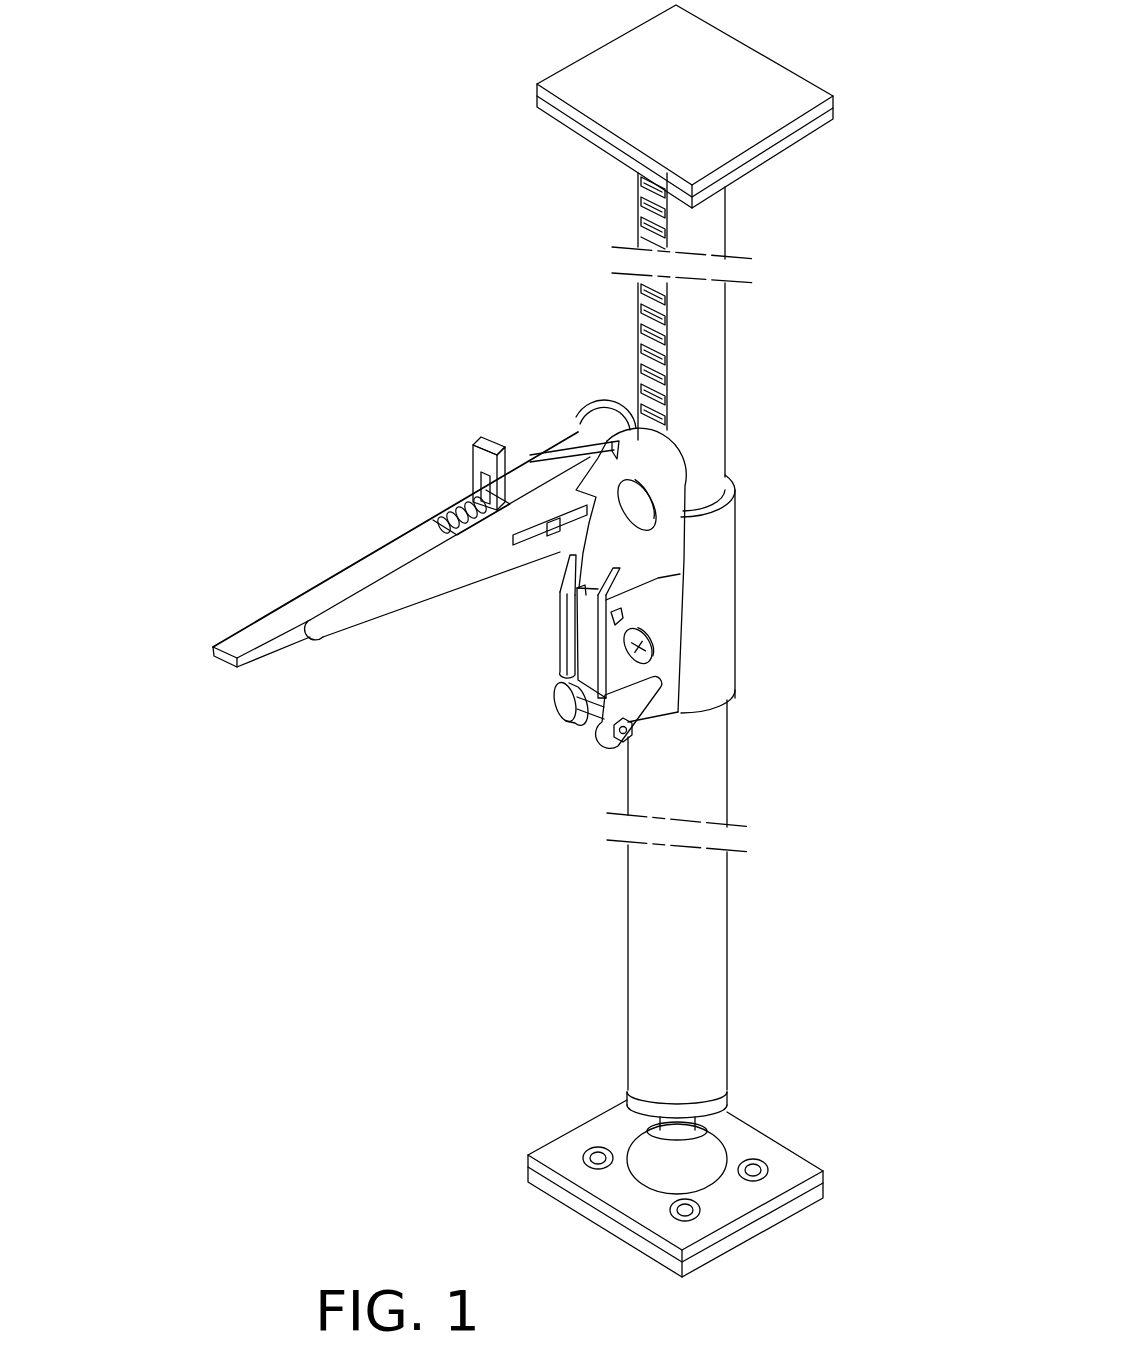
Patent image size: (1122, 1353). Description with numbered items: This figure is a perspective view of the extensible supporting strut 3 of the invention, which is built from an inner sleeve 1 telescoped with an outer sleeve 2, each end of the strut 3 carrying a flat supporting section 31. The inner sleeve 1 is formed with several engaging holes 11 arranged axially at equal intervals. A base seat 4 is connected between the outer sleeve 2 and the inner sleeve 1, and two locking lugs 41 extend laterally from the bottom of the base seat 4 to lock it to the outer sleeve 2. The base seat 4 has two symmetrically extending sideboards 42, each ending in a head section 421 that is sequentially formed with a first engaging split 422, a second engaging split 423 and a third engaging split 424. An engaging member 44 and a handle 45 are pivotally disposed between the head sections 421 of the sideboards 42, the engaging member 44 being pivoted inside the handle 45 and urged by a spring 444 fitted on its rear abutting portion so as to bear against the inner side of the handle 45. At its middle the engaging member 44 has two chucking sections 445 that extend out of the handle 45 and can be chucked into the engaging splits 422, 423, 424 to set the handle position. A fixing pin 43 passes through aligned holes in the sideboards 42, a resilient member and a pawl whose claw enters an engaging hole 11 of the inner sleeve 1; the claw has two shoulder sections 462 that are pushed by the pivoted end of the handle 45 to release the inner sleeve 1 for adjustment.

The inner sleeve 1 is at (693, 335).
The engaging holes 11 is at (637, 200).
The outer sleeve 2 is at (697, 985).
The extensible supporting strut 3 is at (762, 496).
The supporting section 31 is at (757, 95).
The base seat 4 is at (520, 568).
The locking lugs 41 is at (655, 718).
The sideboards 42 is at (660, 560).
The head section 421 is at (663, 460).
The first engaging split 422 is at (650, 590).
The second engaging split 423 is at (573, 553).
The third engaging split 424 is at (615, 447).
The fixing pin 43 is at (650, 653).
The engaging member 44 is at (530, 470).
The spring 444 is at (460, 517).
The chucking sections 445 is at (560, 552).
The handle 45 is at (332, 625).
The shoulder sections 462 is at (582, 590).